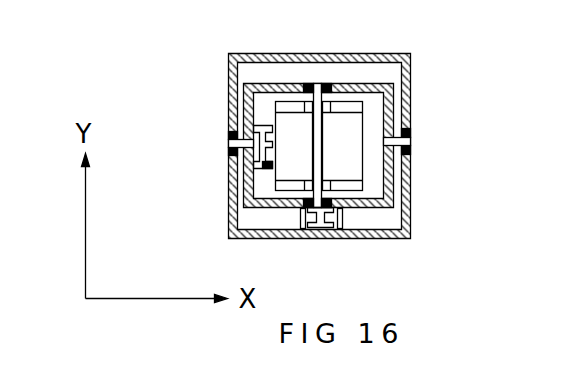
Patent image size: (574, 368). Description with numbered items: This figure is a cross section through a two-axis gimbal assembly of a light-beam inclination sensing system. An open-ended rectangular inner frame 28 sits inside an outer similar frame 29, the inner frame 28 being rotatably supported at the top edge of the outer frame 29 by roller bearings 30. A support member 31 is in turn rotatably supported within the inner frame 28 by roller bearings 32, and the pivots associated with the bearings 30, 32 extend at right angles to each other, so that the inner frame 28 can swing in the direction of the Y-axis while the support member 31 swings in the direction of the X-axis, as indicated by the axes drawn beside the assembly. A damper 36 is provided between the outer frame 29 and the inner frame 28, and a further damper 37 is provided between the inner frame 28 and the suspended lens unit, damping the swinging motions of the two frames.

The inner frame 28 is at (393, 103).
The outer frame 29 is at (408, 73).
The roller bearings 30 is at (228, 150).
The support member 31 is at (363, 172).
The roller bearings 32 is at (327, 83).
The damper 36 is at (303, 228).
The damper 37 is at (258, 124).